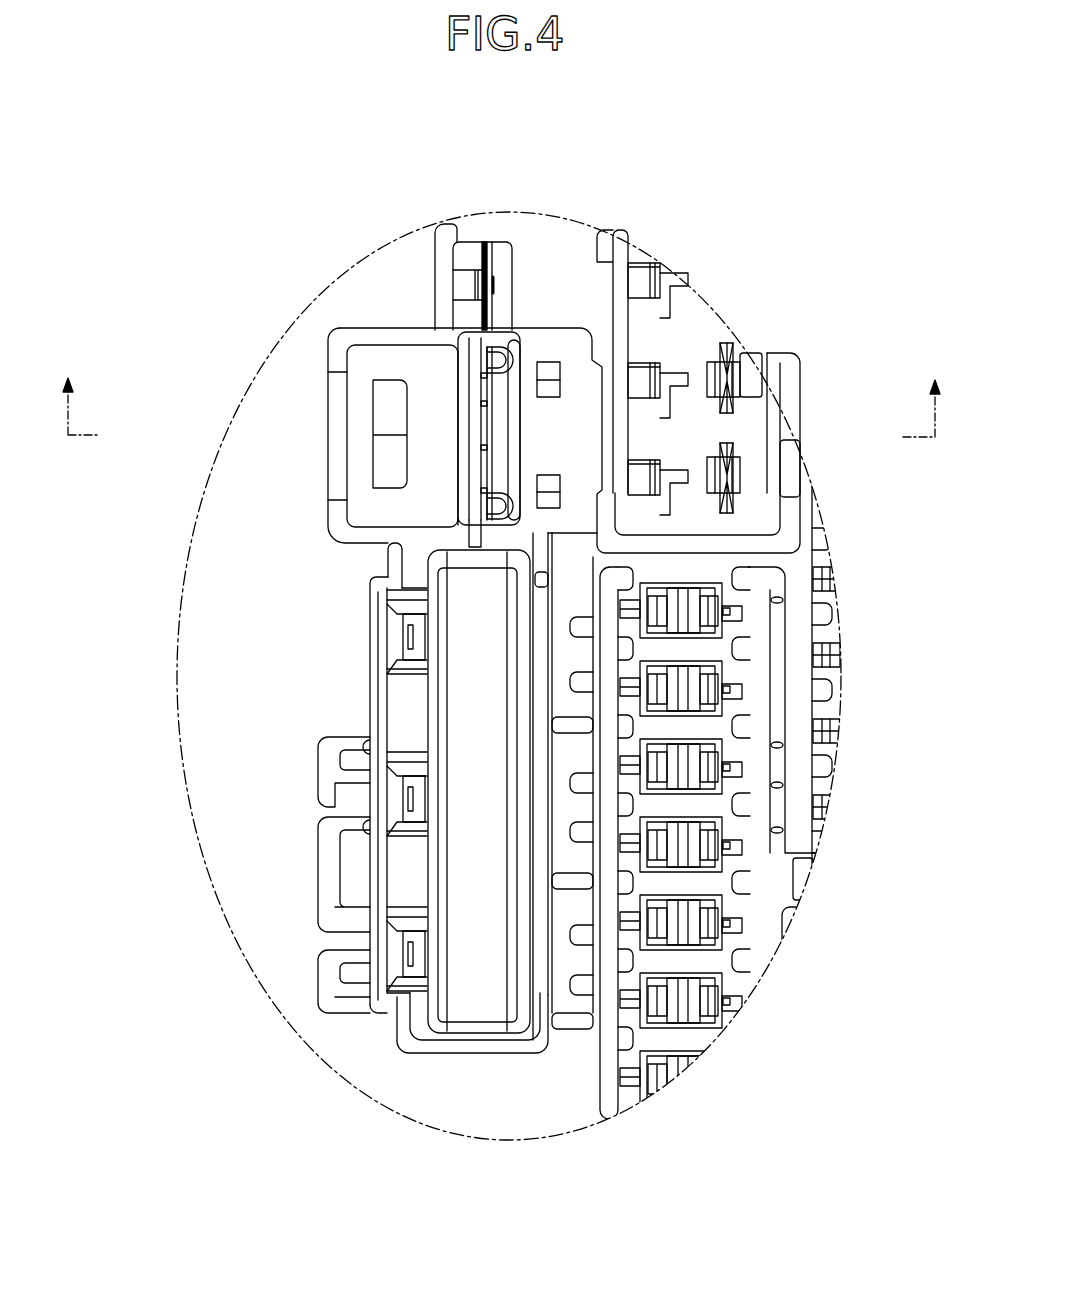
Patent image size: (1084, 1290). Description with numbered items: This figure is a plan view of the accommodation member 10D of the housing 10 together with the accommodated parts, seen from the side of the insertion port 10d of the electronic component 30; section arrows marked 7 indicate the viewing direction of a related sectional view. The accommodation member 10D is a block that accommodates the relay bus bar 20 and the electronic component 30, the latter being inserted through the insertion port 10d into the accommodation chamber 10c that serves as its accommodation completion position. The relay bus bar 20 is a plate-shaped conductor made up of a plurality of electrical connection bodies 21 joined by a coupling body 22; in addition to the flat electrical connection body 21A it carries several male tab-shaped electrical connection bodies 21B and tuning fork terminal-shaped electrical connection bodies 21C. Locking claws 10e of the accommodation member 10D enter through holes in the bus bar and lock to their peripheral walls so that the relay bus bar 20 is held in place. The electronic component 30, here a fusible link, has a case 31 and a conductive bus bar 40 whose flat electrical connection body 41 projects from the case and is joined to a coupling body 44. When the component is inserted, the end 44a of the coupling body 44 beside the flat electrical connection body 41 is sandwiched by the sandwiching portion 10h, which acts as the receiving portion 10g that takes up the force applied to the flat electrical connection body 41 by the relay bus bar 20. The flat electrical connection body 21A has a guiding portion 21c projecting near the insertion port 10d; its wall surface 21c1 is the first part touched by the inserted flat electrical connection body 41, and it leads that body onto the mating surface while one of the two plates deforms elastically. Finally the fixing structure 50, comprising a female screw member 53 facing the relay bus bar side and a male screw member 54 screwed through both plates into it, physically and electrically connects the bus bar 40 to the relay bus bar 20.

The section line 7 is at (501, 407).
The housing 10 is at (428, 678).
The accommodation member 10D is at (480, 781).
The accommodation chamber 10c is at (464, 1113).
The insertion port 10d is at (431, 1040).
The locking claw 10e is at (620, 259).
The receiving portion 10g is at (393, 545).
The sandwiching portion 10h is at (227, 603).
The relay bus bar 20 is at (508, 430).
The electrical connection body 21 is at (495, 615).
The flat electrical connection body 21A is at (493, 397).
The male tab-shaped electrical connection body 21B is at (732, 447).
The tuning fork terminal-shaped electrical connection body 21C is at (742, 1000).
The guiding portion 21c is at (305, 389).
The wall surface 21c1 is at (490, 360).
The coupling body 22 is at (491, 258).
The electronic component 30 is at (329, 879).
The case 31 is at (447, 862).
The bus bar 40 is at (322, 409).
The flat electrical connection body 41 is at (473, 413).
The coupling body 44 is at (278, 561).
The end of the coupling body 44a is at (478, 530).
The fixing structure 50 is at (382, 331).
The female screw member 53 is at (508, 463).
The male screw member 54 is at (373, 408).